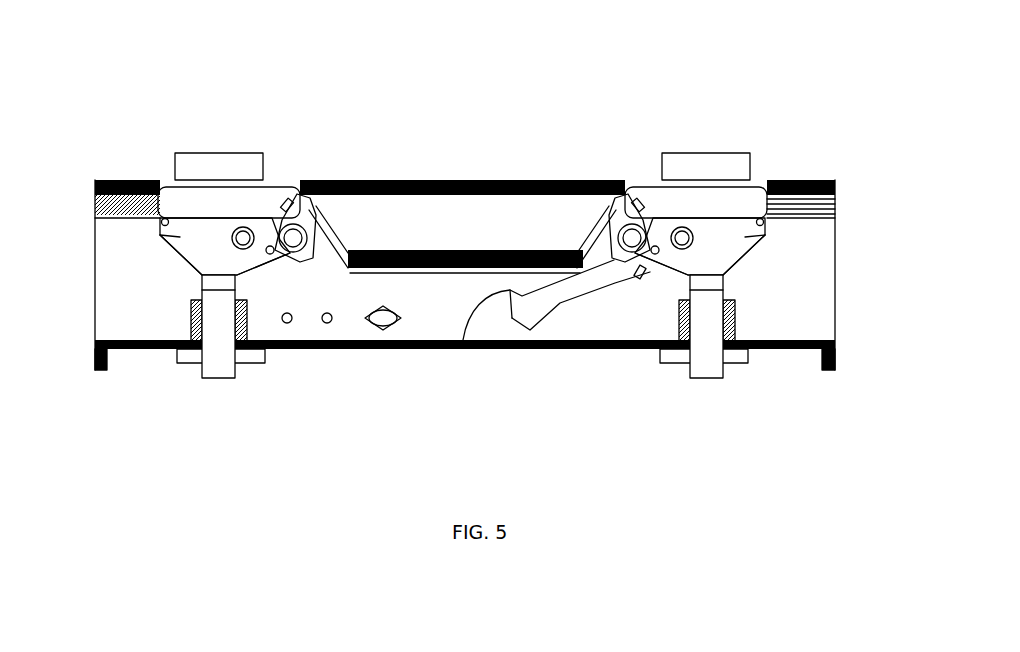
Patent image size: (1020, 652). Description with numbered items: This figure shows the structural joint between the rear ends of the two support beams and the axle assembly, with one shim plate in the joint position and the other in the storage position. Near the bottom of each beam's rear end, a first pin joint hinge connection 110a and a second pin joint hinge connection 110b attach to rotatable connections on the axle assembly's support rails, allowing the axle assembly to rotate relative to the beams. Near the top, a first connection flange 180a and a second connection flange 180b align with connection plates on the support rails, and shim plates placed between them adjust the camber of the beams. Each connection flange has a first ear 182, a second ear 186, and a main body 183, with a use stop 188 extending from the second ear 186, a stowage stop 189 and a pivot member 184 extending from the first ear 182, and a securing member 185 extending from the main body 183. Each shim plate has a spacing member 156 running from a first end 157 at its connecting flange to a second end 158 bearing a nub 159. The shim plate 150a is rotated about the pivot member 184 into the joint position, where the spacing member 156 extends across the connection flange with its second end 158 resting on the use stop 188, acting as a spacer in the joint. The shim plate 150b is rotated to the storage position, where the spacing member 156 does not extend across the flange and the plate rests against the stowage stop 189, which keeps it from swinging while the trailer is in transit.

The first pin joint hinge connection 110a is at (718, 380).
The second pin joint hinge connection 110b is at (218, 365).
The shim plate 150a is at (222, 222).
The shim plate 150b is at (582, 305).
The spacing member 156 is at (217, 197).
The first end 157 is at (320, 225).
The second end 158 is at (142, 180).
The nub 159 is at (162, 222).
The first connection flange 180a is at (248, 195).
The second connection flange 180b is at (735, 195).
The first ear 182 is at (293, 203).
The main body 183 is at (212, 248).
The pivot member 184 is at (624, 214).
The securing member 185 is at (258, 270).
The second ear 186 is at (183, 235).
The use stop 188 is at (185, 232).
The stowage stop 189 is at (271, 255).